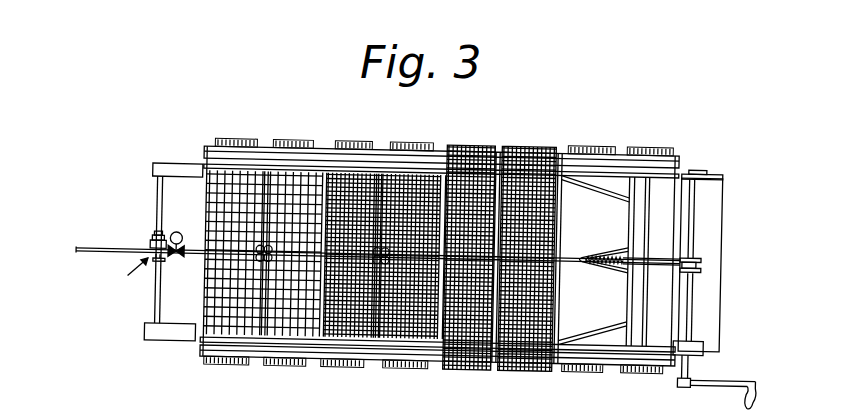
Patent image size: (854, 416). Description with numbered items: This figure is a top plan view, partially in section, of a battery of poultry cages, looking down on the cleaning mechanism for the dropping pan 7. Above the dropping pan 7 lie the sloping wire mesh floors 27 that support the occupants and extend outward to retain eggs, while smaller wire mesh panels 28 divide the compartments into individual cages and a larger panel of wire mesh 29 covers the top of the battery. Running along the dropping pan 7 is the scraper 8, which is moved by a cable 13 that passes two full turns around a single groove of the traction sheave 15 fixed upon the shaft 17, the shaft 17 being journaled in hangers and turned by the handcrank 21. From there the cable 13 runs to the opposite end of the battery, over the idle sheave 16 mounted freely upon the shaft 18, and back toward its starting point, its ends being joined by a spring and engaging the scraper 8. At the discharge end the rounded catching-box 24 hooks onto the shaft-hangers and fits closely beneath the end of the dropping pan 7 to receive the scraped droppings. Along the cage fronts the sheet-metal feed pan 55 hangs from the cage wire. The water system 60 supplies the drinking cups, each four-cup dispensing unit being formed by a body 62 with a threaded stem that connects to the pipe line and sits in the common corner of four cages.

The dropping pan 7 is at (594, 261).
The scraper 8 is at (632, 211).
The cable 13 is at (652, 247).
The traction sheave 15 is at (688, 246).
The idle sheave 16 is at (143, 234).
The shaft 17 is at (683, 210).
The shaft 18 is at (150, 184).
The handcrank 21 is at (717, 370).
The catching-box 24 is at (700, 306).
The wire mesh floor 27 is at (542, 154).
The wire mesh panel 28 is at (405, 262).
The wire mesh top panel 29 is at (290, 180).
The feed pan 55 is at (263, 153).
The water system 60 is at (129, 275).
The body 62 is at (247, 257).